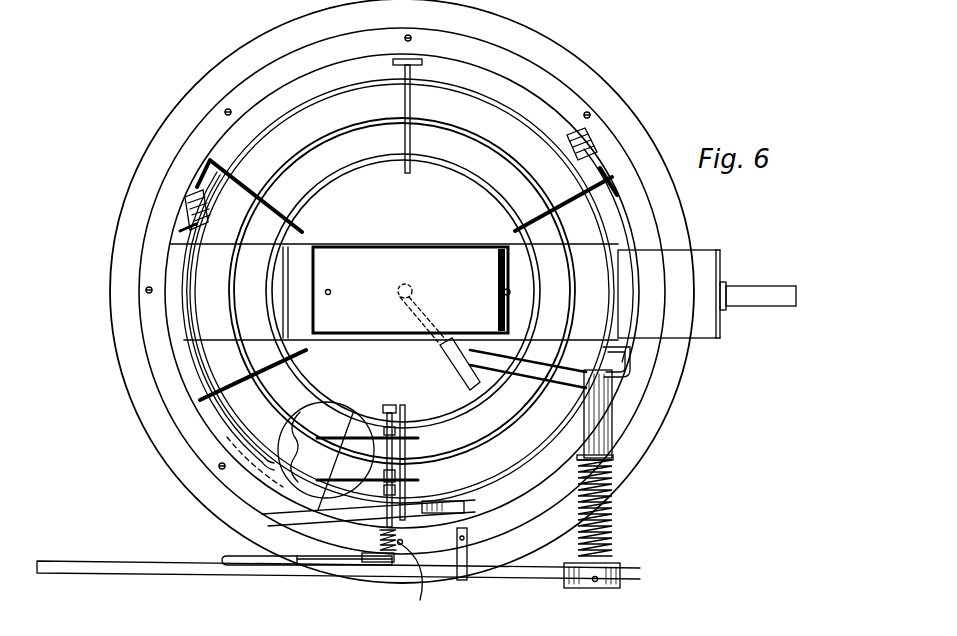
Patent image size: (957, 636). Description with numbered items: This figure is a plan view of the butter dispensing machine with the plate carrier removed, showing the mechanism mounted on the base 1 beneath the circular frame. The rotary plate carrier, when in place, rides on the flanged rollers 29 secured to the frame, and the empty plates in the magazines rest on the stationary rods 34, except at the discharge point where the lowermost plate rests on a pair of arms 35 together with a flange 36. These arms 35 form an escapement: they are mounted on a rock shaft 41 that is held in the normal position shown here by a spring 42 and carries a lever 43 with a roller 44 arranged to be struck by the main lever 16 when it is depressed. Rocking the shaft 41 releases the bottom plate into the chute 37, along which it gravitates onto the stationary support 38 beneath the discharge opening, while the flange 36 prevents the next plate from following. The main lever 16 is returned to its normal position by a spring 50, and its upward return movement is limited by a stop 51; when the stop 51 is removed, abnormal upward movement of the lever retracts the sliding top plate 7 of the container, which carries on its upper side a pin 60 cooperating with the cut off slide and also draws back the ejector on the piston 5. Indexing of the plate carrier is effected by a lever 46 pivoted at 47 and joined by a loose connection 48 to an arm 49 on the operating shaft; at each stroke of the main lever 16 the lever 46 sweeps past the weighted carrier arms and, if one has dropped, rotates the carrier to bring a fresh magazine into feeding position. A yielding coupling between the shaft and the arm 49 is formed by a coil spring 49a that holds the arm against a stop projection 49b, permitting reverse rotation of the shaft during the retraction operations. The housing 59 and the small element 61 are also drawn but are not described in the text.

The base 1 is at (598, 88).
The piston 5 is at (761, 302).
The sliding top plate 7 is at (394, 292).
The main lever 16 is at (526, 579).
The flanged rollers 29 is at (190, 210).
The stationary rods 34 is at (318, 142).
The arms 35 is at (350, 481).
The flange 36 is at (293, 458).
The chute 37 is at (313, 427).
The stationary support 38 is at (398, 291).
The rock shaft 41 is at (375, 518).
The spring 42 is at (402, 571).
The lever 43 is at (298, 576).
The roller 44 is at (232, 576).
The lever 46 is at (454, 356).
The pivot 47 is at (426, 302).
The connection 48 is at (559, 363).
The arm 49 is at (603, 358).
The coil spring 49a is at (612, 378).
The stop projection 49b is at (612, 363).
The spring 50 is at (612, 541).
The stop 51 is at (464, 581).
The box 59 is at (669, 294).
The pin 60 is at (410, 290).
The pin 61 is at (504, 295).